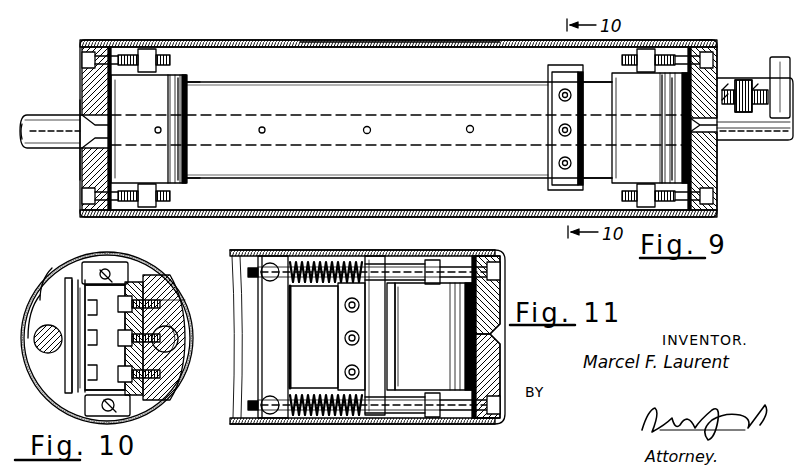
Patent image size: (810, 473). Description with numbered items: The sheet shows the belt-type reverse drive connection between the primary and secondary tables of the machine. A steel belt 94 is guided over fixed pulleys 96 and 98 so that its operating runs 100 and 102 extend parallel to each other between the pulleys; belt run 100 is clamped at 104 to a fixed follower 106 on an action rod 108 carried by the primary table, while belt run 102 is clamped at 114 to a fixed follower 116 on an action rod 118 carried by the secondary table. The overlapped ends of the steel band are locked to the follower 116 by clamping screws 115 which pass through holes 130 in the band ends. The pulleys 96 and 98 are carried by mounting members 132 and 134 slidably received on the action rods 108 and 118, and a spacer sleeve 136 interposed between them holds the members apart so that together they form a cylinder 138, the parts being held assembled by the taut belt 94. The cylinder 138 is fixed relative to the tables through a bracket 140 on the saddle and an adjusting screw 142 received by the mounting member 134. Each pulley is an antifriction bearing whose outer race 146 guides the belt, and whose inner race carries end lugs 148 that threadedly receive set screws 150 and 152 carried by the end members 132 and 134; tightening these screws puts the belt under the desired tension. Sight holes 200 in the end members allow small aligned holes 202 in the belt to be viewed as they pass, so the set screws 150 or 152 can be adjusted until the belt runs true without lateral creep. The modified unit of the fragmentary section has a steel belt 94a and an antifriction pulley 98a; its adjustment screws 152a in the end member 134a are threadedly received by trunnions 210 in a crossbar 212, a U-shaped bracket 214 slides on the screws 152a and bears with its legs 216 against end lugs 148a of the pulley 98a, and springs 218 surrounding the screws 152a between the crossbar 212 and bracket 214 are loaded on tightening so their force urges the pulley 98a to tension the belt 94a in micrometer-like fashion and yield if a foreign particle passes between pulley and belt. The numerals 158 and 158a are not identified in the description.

In FIG. 9, the belt 94 is at (347, 80).
In FIG. 10, the belt 94 is at (67, 369).
In FIG. 9, the pulley 96 is at (192, 77).
In FIG. 10, the pulley 96 is at (114, 295).
In FIG. 9, the pulley 98 is at (620, 80).
In FIG. 10, the belt run 100 is at (68, 323).
In FIG. 9, the belt run 102 is at (425, 100).
In FIG. 10, the belt run 102 is at (186, 354).
In FIG. 10, the clamp 104 is at (68, 332).
In FIG. 10, the fixed follower 106 is at (50, 297).
In FIG. 10, the action rod 108 is at (38, 330).
In FIG. 9, the clamp 114 is at (556, 114).
In FIG. 10, the clamp 114 is at (135, 313).
In FIG. 9, the clamping screws 115 is at (558, 95).
In FIG. 10, the clamping screws 115 is at (117, 338).
In FIG. 9, the fixed follower 116 is at (556, 108).
In FIG. 10, the fixed follower 116 is at (171, 314).
In FIG. 9, the action rod 118 is at (43, 125).
In FIG. 10, the action rod 118 is at (180, 340).
In FIG. 10, the holes 130 is at (161, 300).
In FIG. 9, the mounting member 132 is at (89, 161).
In FIG. 9, the mounting member 134 is at (706, 50).
In FIG. 9, the spacer sleeve 136 is at (490, 41).
In FIG. 10, the spacer sleeve 136 is at (77, 258).
In FIG. 9, the cylinder 138 is at (696, 40).
In FIG. 10, the cylinder 138 is at (157, 266).
In FIG. 9, the bracket 140 is at (778, 58).
In FIG. 9, the adjusting screw 142 is at (740, 80).
In FIG. 9, the outer race 146 is at (176, 107).
In FIG. 10, the outer race 146 is at (88, 388).
In FIG. 9, the end lugs 148 is at (149, 52).
In FIG. 10, the end lugs 148 is at (90, 270).
In FIG. 9, the set screw 150 is at (118, 58).
In FIG. 10, the set screw 150 is at (72, 266).
In FIG. 9, the set screw 152 is at (667, 55).
In FIG. 9, the end cap 158 is at (710, 20).
In FIG. 9, the holes 200 is at (718, 148).
In FIG. 9, the holes 202 is at (154, 130).
In FIG. 11, the steel belt 94a is at (243, 378).
In FIG. 11, the pulley 98a is at (440, 340).
In FIG. 11, the end member 134a is at (503, 297).
In FIG. 11, the end lugs 148a is at (442, 261).
In FIG. 11, the adjustment screws 152a is at (456, 266).
In FIG. 11, the end cap 158a is at (490, 250).
In FIG. 11, the trunnions 210 is at (272, 264).
In FIG. 11, the crossbar 212 is at (279, 341).
In FIG. 11, the U-shaped bracket 214 is at (376, 300).
In FIG. 11, the legs 216 is at (403, 263).
In FIG. 11, the springs 218 is at (321, 262).